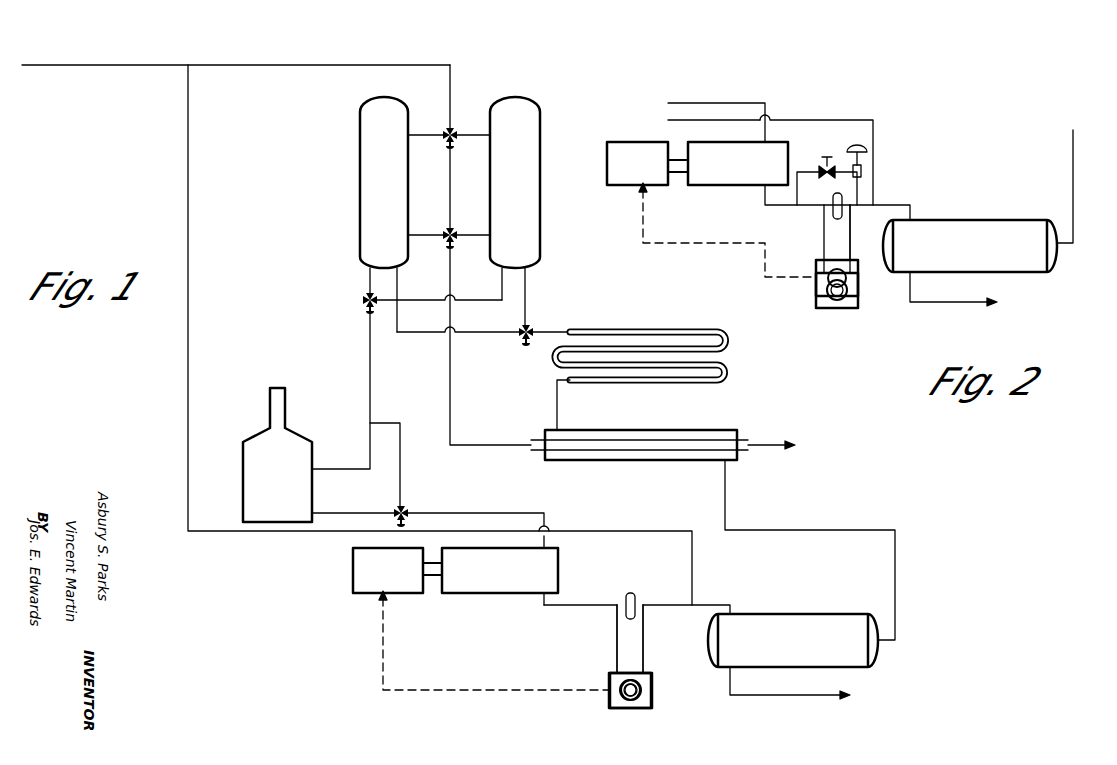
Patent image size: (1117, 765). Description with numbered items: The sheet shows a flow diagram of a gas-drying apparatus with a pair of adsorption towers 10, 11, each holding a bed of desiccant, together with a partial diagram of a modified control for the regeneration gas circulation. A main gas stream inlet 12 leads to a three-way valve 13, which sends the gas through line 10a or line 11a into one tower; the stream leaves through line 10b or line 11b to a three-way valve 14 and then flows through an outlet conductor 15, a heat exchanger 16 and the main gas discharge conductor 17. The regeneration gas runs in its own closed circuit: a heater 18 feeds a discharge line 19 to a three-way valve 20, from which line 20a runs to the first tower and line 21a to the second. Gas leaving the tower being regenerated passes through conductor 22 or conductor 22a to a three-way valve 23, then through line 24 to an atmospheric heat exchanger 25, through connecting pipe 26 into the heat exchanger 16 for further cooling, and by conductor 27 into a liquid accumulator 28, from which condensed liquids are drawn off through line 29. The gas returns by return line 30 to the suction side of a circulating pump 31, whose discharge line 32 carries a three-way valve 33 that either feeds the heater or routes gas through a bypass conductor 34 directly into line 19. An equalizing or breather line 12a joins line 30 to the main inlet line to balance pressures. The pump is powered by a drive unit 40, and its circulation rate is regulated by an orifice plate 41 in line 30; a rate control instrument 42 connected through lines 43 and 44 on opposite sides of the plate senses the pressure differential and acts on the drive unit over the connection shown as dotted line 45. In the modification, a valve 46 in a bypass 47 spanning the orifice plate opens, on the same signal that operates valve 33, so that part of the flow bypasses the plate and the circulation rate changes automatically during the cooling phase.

In FIG. 1, the adsorption tower 10 is at (360, 184).
In FIG. 1, the line 10a is at (420, 135).
In FIG. 1, the line 10b is at (428, 235).
In FIG. 1, the adsorption tower 11 is at (540, 128).
In FIG. 1, the line 11a is at (470, 138).
In FIG. 1, the line 11b is at (470, 235).
In FIG. 1, the main gas stream inlet 12 is at (266, 65).
In FIG. 1, the equalizing or breather line 12a is at (188, 145).
In FIG. 2, the equalizing or breather line 12a is at (835, 119).
In FIG. 1, the three-way valve 13 is at (455, 128).
In FIG. 1, the three-way valve 14 is at (448, 228).
In FIG. 1, the outlet conductor 15 is at (450, 355).
In FIG. 1, the heat exchanger 16 is at (690, 430).
In FIG. 1, the main gas discharge conductor 17 is at (770, 445).
In FIG. 1, the heater 18 is at (243, 455).
In FIG. 1, the discharge line 19 is at (370, 350).
In FIG. 1, the three-way valve 20 is at (358, 300).
In FIG. 1, the line 20a is at (370, 280).
In FIG. 1, the line 21a is at (420, 300).
In FIG. 1, the conductor 22 is at (525, 278).
In FIG. 1, the conductor 22a is at (425, 333).
In FIG. 1, the three-way valve 23 is at (528, 342).
In FIG. 1, the line 24 is at (536, 325).
In FIG. 1, the heat exchanger 25 is at (630, 330).
In FIG. 1, the connecting pipe 26 is at (557, 413).
In FIG. 1, the conductor 27 is at (725, 480).
In FIG. 2, the conductor 27 is at (1073, 165).
In FIG. 1, the liquid accumulator 28 is at (770, 614).
In FIG. 2, the liquid accumulator 28 is at (948, 220).
In FIG. 1, the line 29 is at (770, 695).
In FIG. 2, the line 29 is at (968, 295).
In FIG. 1, the return line 30 is at (575, 605).
In FIG. 1, the circulating pump 31 is at (520, 593).
In FIG. 2, the circulating pump 31 is at (740, 185).
In FIG. 1, the discharge line 32 is at (520, 513).
In FIG. 2, the discharge line 32 is at (738, 103).
In FIG. 1, the three-way valve 33 is at (405, 507).
In FIG. 1, the bypass conductor 34 is at (400, 445).
In FIG. 1, the drive unit 40 is at (353, 583).
In FIG. 2, the drive unit 40 is at (627, 142).
In FIG. 1, the orifice plate 41 is at (631, 593).
In FIG. 2, the orifice plate 41 is at (848, 225).
In FIG. 1, the rate control instrument 42 is at (652, 685).
In FIG. 2, the rate control instrument 42 is at (850, 297).
In FIG. 1, the line 43 is at (617, 642).
In FIG. 2, the line 43 is at (827, 160).
In FIG. 1, the line 44 is at (643, 630).
In FIG. 1, the dotted line 45 is at (450, 690).
In FIG. 2, the dotted line 45 is at (668, 243).
In FIG. 2, the valve 46 is at (865, 148).
In FIG. 2, the bypass 47 is at (862, 177).